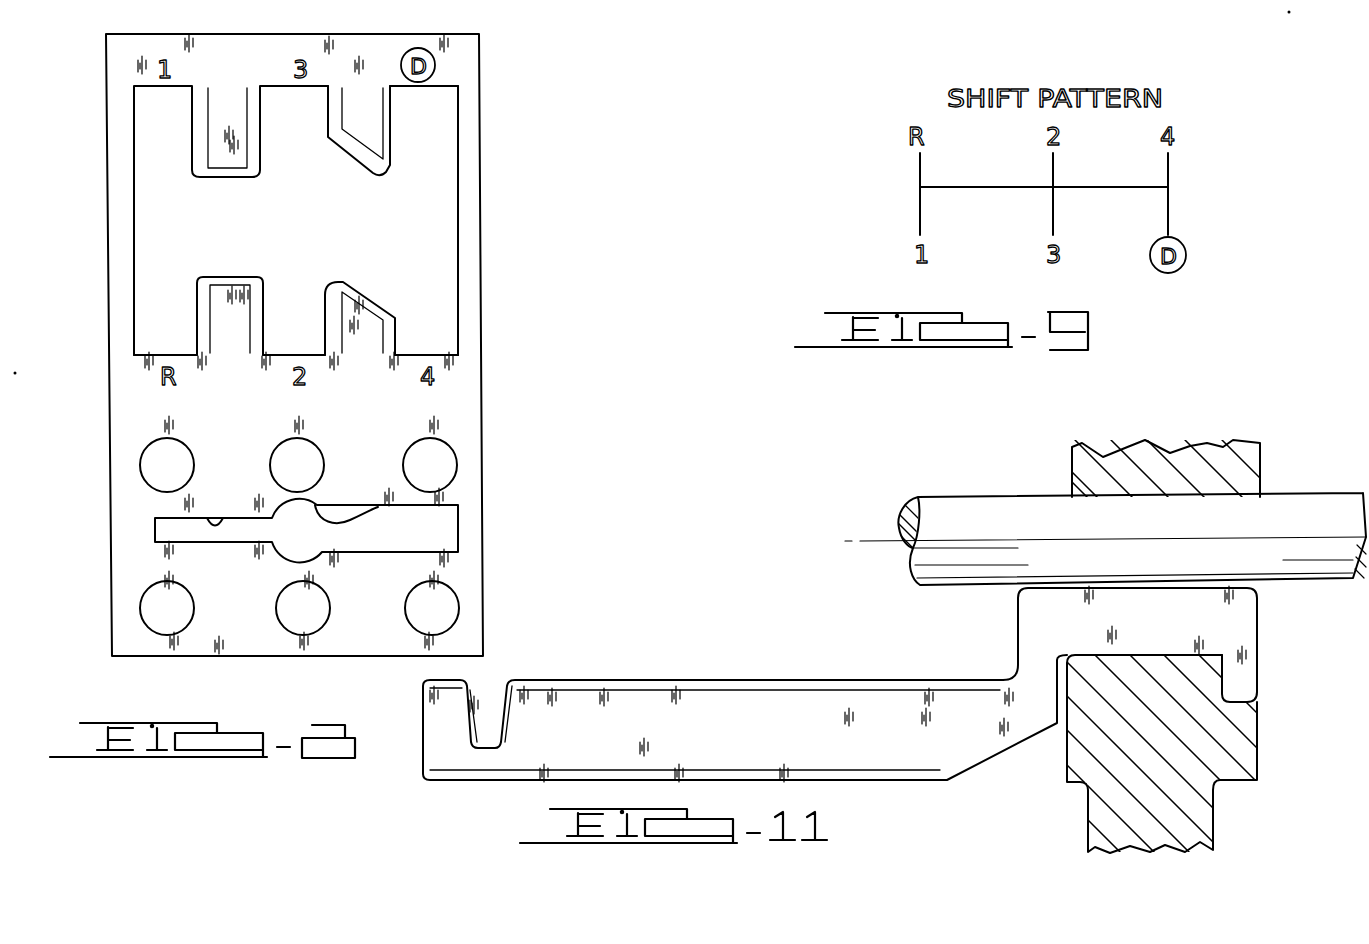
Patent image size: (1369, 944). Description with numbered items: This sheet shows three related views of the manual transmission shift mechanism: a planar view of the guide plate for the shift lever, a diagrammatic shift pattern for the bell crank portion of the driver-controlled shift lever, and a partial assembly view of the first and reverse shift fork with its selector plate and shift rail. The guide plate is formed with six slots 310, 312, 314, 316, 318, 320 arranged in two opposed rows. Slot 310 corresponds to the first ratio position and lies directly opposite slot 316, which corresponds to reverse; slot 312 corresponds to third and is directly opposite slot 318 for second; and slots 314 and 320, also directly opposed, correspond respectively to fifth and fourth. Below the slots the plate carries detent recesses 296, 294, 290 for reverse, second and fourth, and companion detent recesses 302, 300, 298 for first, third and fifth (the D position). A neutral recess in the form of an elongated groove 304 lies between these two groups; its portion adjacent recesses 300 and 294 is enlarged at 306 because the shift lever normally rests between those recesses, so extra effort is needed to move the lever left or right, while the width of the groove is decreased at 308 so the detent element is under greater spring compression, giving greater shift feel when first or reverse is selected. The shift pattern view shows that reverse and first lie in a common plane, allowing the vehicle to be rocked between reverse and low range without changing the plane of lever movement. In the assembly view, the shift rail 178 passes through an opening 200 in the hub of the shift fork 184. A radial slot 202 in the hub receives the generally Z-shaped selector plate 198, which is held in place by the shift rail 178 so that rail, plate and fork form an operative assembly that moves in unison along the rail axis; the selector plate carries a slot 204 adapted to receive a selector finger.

In FIG. 11, the shift rail 178 is at (1055, 528).
In FIG. 11, the shift fork 184 is at (1210, 720).
In FIG. 11, the shift selector plate 198 is at (1040, 623).
In FIG. 11, the opening 200 is at (1200, 495).
In FIG. 11, the radial slot 202 is at (1173, 655).
In FIG. 11, the slot 204 is at (490, 700).
In FIG. 8, the detent recess 290 is at (430, 620).
In FIG. 8, the detent recess 294 is at (312, 620).
In FIG. 8, the detent recess 296 is at (165, 620).
In FIG. 8, the detent recess 298 is at (430, 460).
In FIG. 8, the detent recess 300 is at (297, 460).
In FIG. 8, the detent recess 302 is at (170, 463).
In FIG. 8, the neutral recess 304 is at (390, 550).
In FIG. 8, the enlarged portion 306 is at (383, 476).
In FIG. 8, the decreased-width portion 308 is at (253, 477).
In FIG. 8, the slot 310 is at (177, 145).
In FIG. 8, the slot 312 is at (308, 147).
In FIG. 8, the slot 314 is at (427, 125).
In FIG. 8, the slot 316 is at (165, 315).
In FIG. 8, the slot 318 is at (278, 330).
In FIG. 8, the slot 320 is at (430, 313).